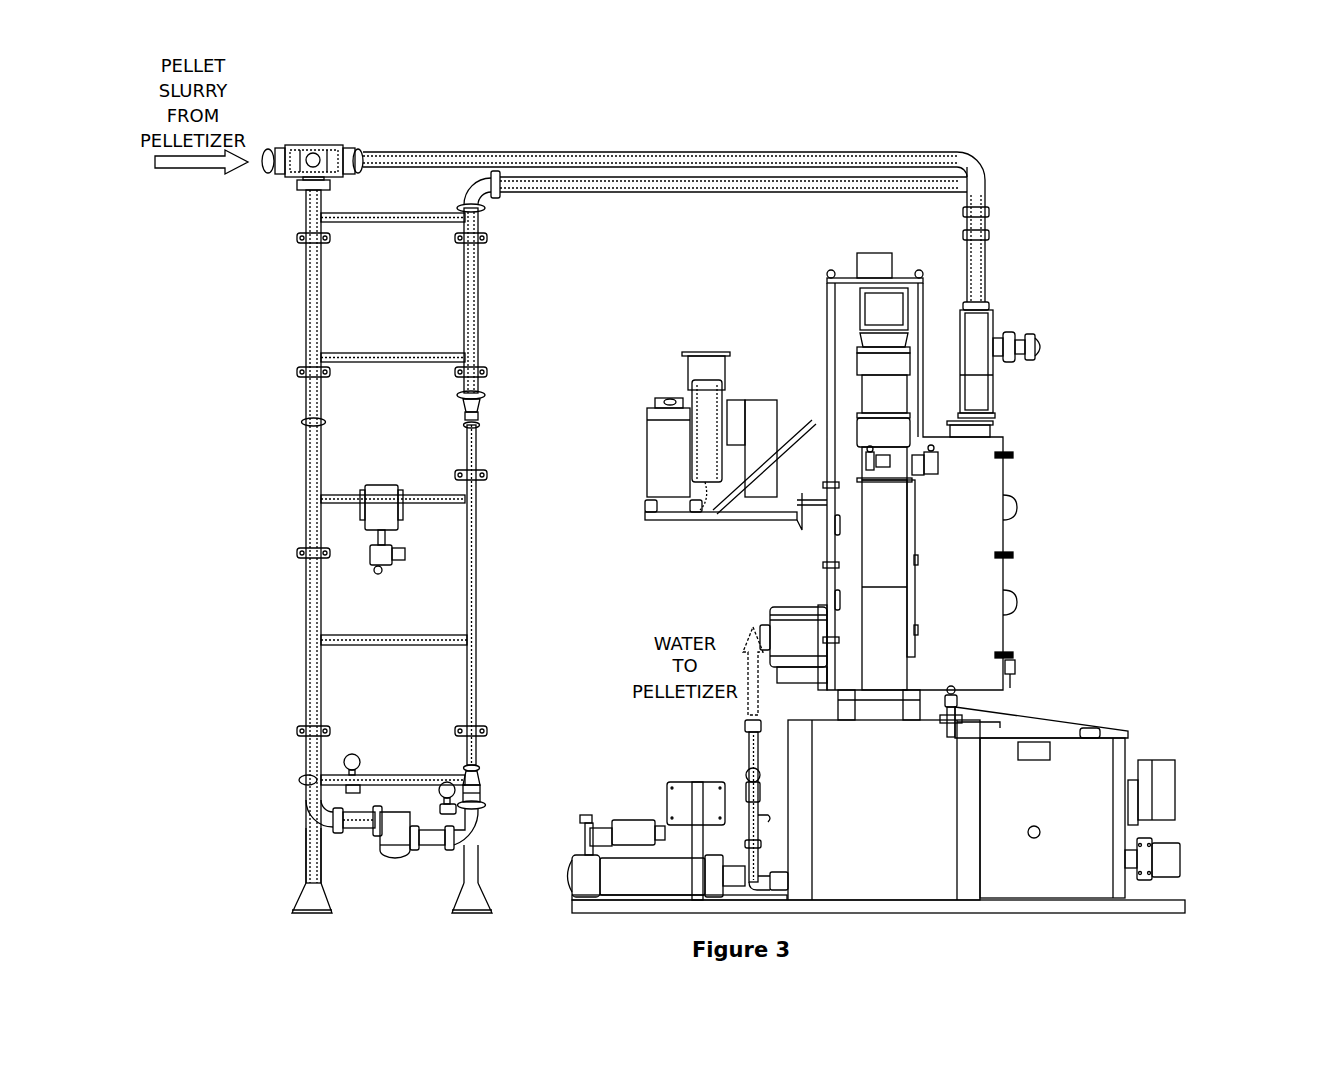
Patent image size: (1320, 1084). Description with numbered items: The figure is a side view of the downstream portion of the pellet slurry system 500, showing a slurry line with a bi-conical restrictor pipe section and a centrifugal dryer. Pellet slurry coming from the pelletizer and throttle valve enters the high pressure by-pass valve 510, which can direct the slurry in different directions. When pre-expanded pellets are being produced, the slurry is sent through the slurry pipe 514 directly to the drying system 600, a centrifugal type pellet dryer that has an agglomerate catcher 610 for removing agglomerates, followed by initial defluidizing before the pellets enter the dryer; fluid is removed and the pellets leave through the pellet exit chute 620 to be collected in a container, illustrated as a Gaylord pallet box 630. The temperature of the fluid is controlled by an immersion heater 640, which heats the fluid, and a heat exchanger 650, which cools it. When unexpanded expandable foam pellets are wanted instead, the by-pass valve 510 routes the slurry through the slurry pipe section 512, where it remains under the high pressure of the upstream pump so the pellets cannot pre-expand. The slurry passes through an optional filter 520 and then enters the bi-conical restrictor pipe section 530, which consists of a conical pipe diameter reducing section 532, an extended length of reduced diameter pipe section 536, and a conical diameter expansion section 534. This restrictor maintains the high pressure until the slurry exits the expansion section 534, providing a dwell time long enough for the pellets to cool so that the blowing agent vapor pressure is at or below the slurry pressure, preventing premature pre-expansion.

The pellet slurry conveying and dewatering system 500 is at (585, 78).
The high pressure by-pass valve 510 is at (320, 140).
The slurry pipe section 512 is at (300, 308).
The slurry pipe 514 is at (742, 148).
The optional filter 520 is at (388, 865).
The bi-conical restrictor pipe section 530 is at (483, 657).
The conical pipe diameter reducing section 532 is at (485, 778).
The conical diameter expansion section 534 is at (485, 417).
The extended length of reduced diameter pipe section 536 is at (483, 532).
The drying system 600 is at (1010, 572).
The agglomerate catcher 610 is at (1000, 312).
The pellet exit chute 620 is at (885, 628).
The Gaylord pallet box 630 is at (910, 880).
The immersion heater 640 is at (1163, 862).
The heat exchanger 650 is at (626, 870).